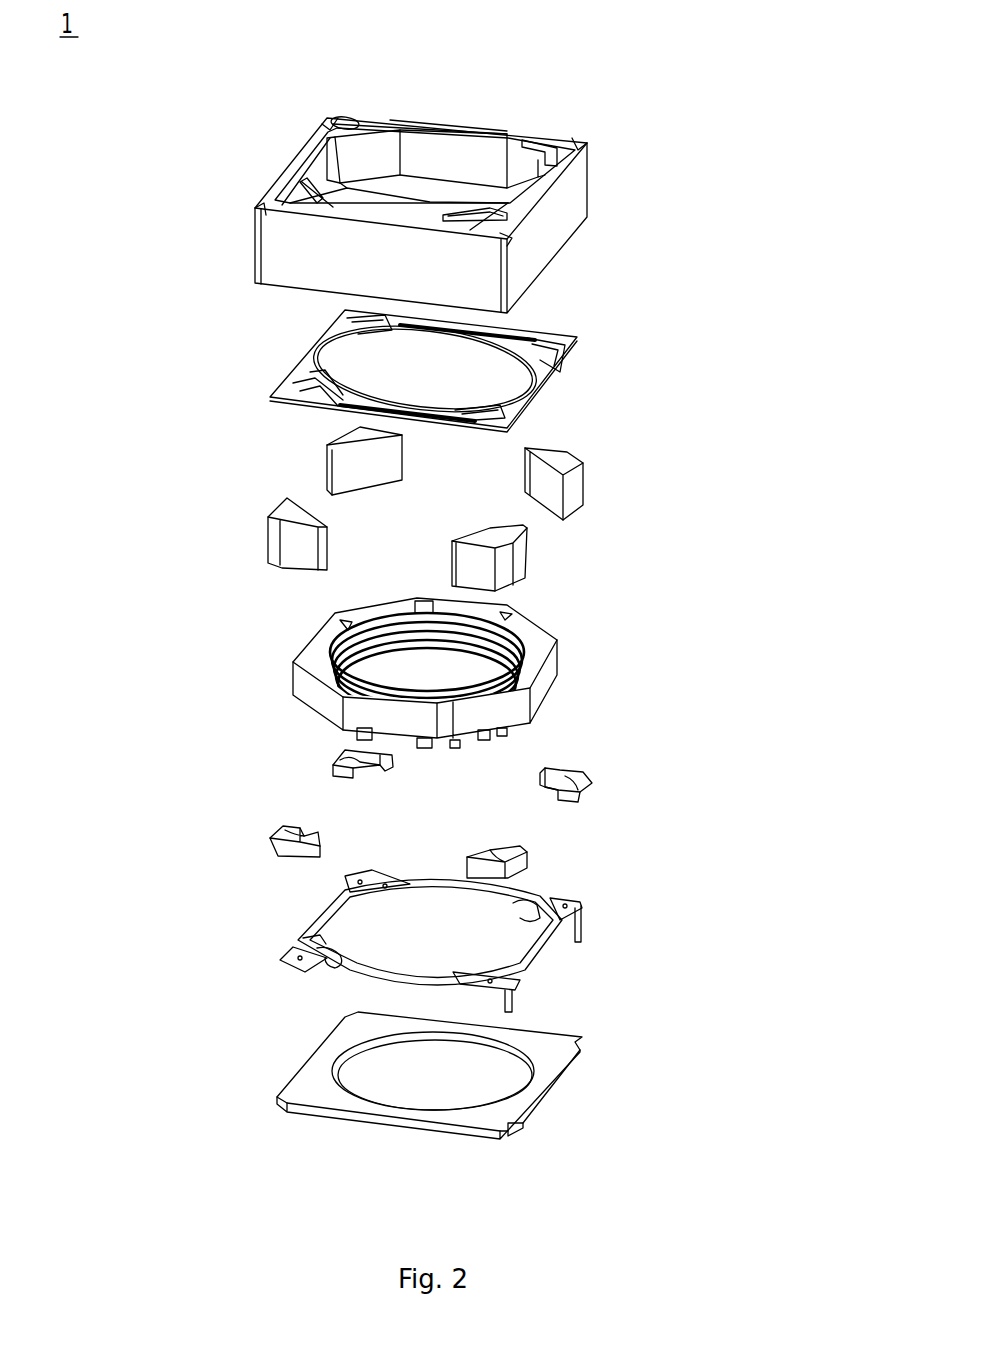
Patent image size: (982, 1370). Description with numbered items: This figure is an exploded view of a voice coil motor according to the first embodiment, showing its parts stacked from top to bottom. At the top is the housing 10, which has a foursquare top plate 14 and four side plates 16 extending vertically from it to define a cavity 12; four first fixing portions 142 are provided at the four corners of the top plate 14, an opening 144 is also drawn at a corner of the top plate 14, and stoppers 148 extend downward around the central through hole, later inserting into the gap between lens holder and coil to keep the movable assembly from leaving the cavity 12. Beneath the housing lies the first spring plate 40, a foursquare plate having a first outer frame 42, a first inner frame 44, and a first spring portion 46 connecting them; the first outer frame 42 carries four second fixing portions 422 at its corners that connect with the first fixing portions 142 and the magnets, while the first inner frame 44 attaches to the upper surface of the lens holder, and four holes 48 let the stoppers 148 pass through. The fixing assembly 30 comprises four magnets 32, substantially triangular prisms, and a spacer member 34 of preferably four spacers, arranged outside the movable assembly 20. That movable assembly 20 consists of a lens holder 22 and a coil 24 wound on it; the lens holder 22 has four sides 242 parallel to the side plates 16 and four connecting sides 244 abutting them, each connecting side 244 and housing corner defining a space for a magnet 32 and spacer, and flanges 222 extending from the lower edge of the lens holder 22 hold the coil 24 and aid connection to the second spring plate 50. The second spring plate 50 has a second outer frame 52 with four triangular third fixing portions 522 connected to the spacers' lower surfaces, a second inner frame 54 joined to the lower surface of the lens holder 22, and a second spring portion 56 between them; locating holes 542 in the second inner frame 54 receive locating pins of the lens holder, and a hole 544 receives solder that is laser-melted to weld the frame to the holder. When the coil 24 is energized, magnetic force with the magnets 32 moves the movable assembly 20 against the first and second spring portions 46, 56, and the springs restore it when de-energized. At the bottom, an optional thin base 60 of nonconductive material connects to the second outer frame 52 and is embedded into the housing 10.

The housing 10 is at (228, 196).
The cavity 12 is at (430, 204).
The top plate 14 is at (490, 122).
The side plates 16 is at (560, 217).
The first fixing portions 142 is at (535, 220).
The through hole 144 is at (335, 118).
The stoppers 148 is at (385, 153).
The movable assembly 20 is at (766, 593).
The lens holder 22 is at (560, 645).
The flange 222 is at (517, 727).
The coil 24 is at (714, 638).
The sides 242 is at (558, 690).
The connecting sides 244 is at (493, 720).
The fixing assembly 30 is at (134, 568).
The magnets 32 is at (480, 573).
The spacer member 34 is at (337, 760).
The first spring plate 40 is at (292, 328).
The first outer frame 42 is at (550, 378).
The second fixing portions 422 is at (570, 340).
The first inner frame 44 is at (497, 405).
The first spring portion 46 is at (300, 388).
The holes 48 is at (530, 348).
The second spring plate 50 is at (285, 903).
The second outer frame 52 is at (553, 893).
The third fixing portions 522 is at (577, 898).
The second inner frame 54 is at (582, 940).
The locating holes 542 is at (300, 948).
The hole 544 is at (303, 937).
The second spring portion 56 is at (553, 925).
The base 60 is at (548, 1057).